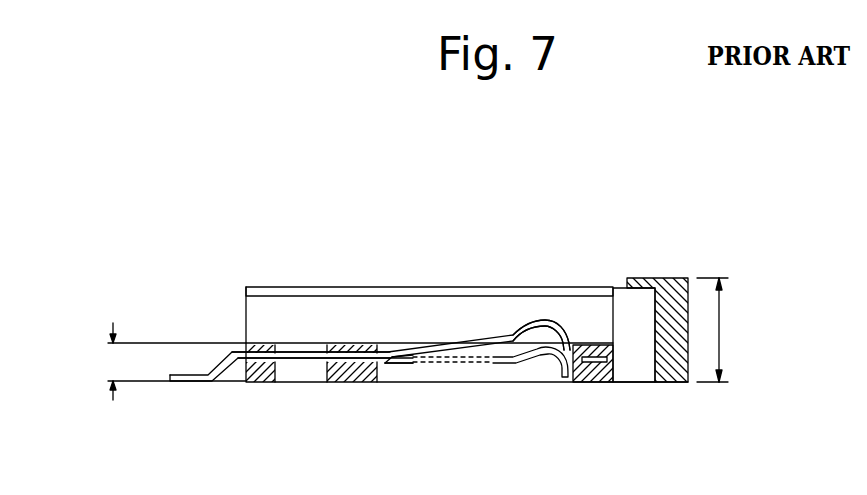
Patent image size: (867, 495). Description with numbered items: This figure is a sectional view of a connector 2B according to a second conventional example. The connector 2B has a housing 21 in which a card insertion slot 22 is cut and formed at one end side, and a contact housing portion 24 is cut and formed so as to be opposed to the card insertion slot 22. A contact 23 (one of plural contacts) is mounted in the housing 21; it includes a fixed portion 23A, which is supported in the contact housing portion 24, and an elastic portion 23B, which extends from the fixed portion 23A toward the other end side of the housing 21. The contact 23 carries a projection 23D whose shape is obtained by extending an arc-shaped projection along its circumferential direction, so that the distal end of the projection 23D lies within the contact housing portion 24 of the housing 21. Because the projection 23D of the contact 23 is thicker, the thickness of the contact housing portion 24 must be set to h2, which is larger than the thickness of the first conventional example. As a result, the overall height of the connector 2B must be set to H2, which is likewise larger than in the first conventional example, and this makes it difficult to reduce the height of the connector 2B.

The connector 2B is at (487, 268).
The housing 21 is at (302, 313).
The card insertion slot 22 is at (370, 313).
The contact 23 is at (401, 343).
The fixed portion 23A is at (327, 382).
The contact housing portion 24 is at (393, 366).
The elastic portion 23B is at (460, 365).
The projection 23D is at (549, 320).
The thickness of the contact housing portion h2 is at (153, 361).
The height of the connector H2 is at (732, 330).